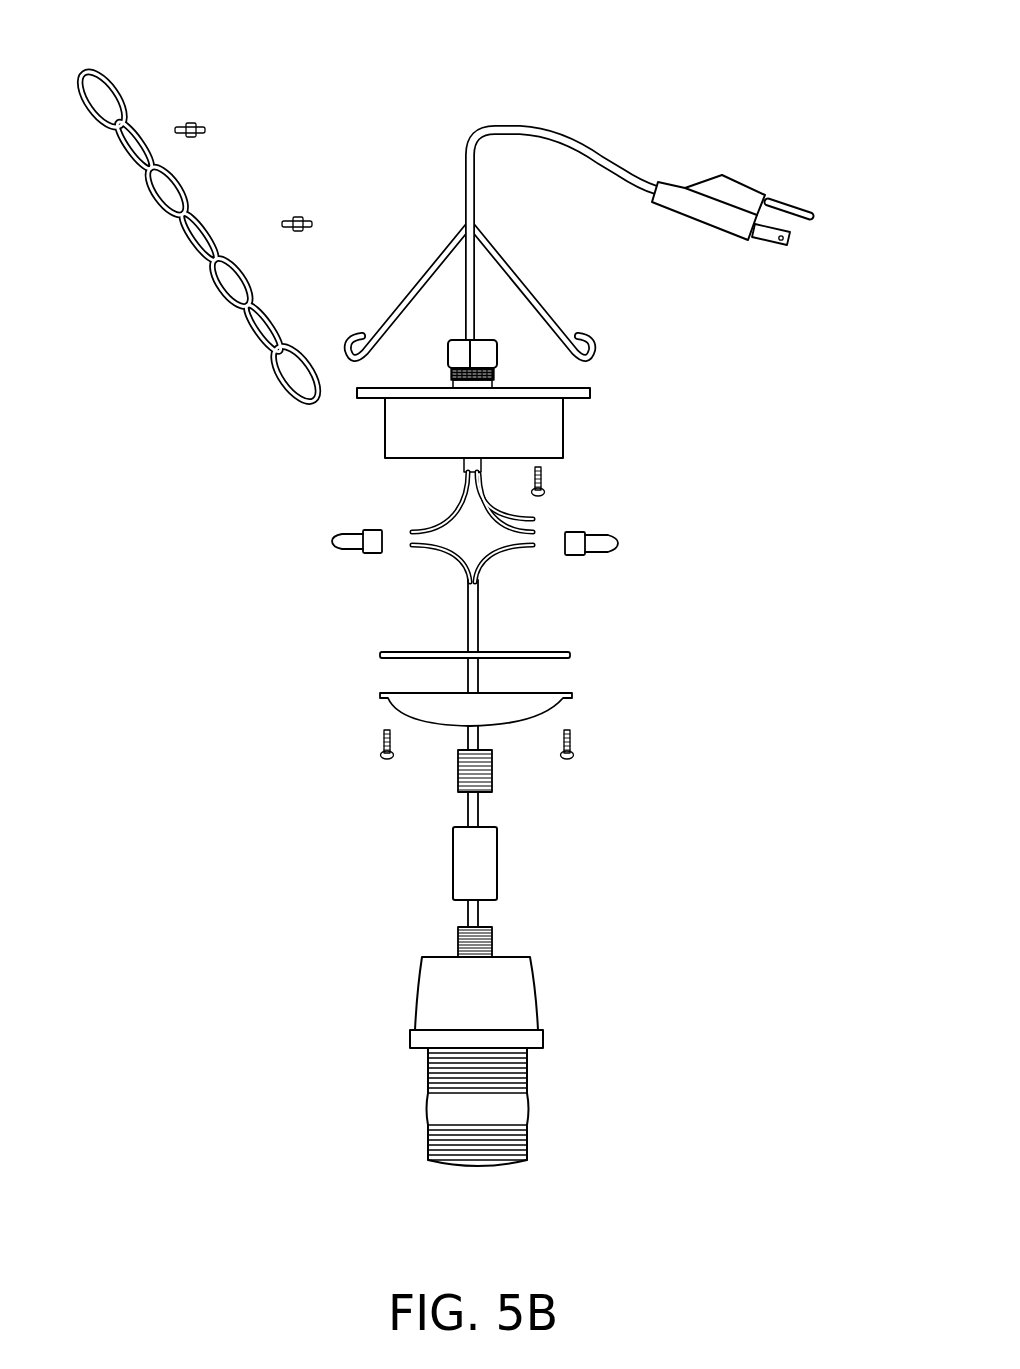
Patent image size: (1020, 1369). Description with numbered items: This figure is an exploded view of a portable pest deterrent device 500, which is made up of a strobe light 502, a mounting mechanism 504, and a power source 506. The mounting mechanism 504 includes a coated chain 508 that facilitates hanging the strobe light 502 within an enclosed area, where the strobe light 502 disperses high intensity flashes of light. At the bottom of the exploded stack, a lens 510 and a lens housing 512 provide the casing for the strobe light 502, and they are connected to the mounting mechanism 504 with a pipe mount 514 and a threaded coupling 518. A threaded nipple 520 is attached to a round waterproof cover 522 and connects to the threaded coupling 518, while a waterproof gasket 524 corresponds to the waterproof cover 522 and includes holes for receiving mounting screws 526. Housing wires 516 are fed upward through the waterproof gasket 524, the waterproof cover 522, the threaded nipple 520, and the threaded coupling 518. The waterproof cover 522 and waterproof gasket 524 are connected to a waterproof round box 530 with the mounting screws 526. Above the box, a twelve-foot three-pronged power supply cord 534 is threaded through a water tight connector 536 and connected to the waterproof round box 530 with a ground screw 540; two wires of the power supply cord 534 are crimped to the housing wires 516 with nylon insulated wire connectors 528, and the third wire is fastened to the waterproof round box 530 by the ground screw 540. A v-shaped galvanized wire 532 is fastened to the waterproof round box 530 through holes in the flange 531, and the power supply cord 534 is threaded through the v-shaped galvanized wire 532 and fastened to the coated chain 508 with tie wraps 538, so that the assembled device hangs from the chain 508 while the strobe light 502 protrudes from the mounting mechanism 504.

The portable pest deterrent device 500 is at (683, 70).
The strobe light 502 is at (302, 1052).
The mounting mechanism 504 is at (206, 653).
The power source 506 is at (716, 180).
The chain 508 is at (215, 283).
The lens 510 is at (428, 1088).
The lens housing 512 is at (422, 998).
The pipe mount 514 is at (456, 938).
The housing wires 516 is at (470, 637).
The threaded coupling 518 is at (453, 860).
The threaded nipple 520 is at (458, 775).
The waterproof cover 522 is at (382, 695).
The waterproof gasket 524 is at (380, 654).
The mounting screws 526 is at (382, 755).
The insulated wire connectors 528 is at (332, 540).
The waterproof round box 530 is at (385, 428).
The flange 531 is at (590, 394).
The v-shaped galvanized wire 532 is at (531, 298).
The 3-pronged power supply cord 534 is at (478, 182).
The water tight connector 536 is at (497, 358).
The tie wraps 538 is at (197, 140).
The ground screw 540 is at (544, 492).